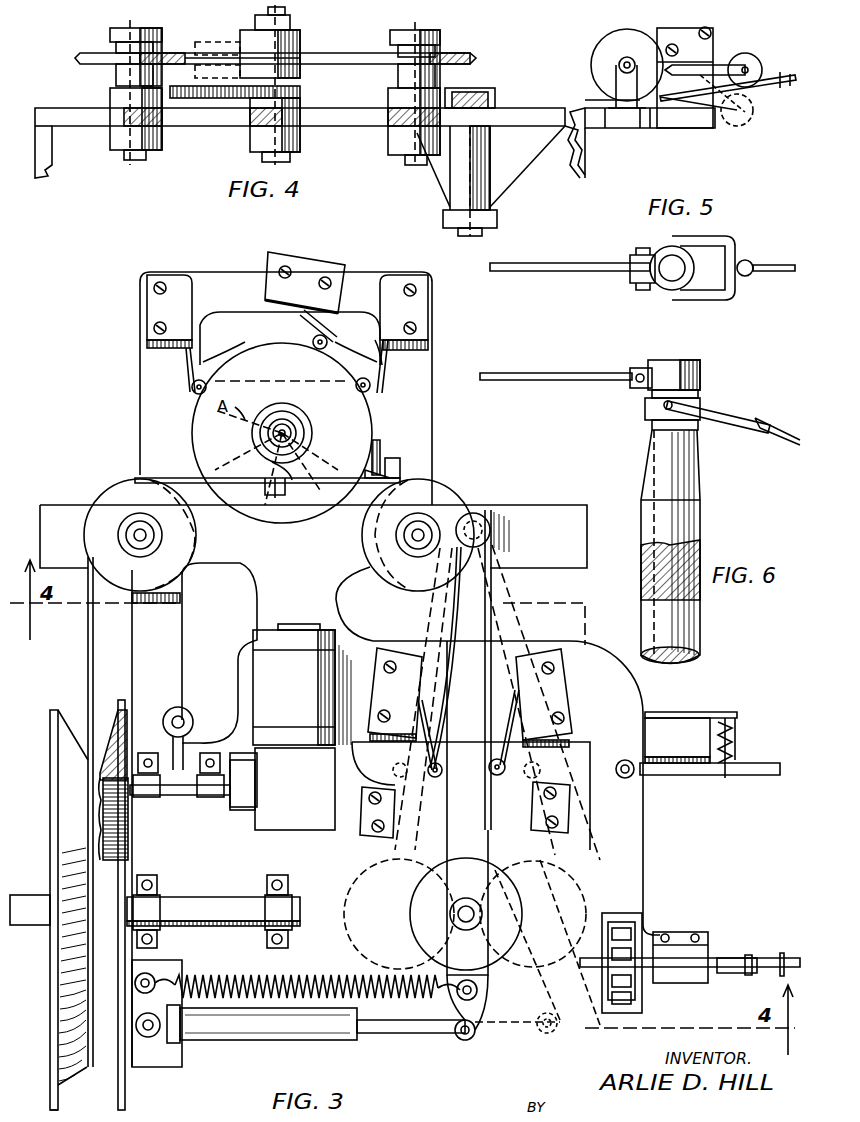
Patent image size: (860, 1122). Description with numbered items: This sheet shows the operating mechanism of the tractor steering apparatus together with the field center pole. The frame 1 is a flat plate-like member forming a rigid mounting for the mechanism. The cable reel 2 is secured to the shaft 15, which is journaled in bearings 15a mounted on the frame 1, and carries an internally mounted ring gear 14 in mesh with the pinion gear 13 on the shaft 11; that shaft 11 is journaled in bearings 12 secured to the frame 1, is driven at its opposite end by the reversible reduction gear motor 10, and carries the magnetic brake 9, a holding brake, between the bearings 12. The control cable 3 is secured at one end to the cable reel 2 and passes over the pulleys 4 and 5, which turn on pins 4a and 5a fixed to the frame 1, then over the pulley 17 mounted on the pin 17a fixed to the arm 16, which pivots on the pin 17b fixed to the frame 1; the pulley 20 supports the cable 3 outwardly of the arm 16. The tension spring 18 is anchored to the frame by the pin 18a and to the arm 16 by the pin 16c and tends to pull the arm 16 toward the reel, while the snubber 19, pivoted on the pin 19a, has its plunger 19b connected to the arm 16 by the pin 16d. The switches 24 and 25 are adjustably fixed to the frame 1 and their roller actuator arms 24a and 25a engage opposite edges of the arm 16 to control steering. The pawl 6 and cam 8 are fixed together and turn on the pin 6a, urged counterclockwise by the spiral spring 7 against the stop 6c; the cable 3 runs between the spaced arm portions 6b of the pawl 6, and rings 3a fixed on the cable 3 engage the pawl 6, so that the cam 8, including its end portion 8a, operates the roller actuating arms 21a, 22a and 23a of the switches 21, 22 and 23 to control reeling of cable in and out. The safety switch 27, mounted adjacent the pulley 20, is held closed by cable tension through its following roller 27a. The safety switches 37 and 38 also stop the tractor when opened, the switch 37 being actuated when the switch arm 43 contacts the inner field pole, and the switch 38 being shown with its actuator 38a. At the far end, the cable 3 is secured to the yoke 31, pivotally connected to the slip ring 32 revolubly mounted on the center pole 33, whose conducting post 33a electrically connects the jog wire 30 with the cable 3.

In FIG. 4, the frame 1 is at (522, 110).
In FIG. 3, the frame 1 is at (420, 440).
In FIG. 3, the cable reel 2 is at (50, 720).
In FIG. 4, the control cable 3 is at (338, 58).
In FIG. 5, the control cable 3 is at (780, 78).
In FIG. 6, the control cable 3 is at (785, 262).
In FIG. 3, the control cable 3 is at (207, 495).
In FIG. 5, the rings 3a is at (790, 88).
In FIG. 3, the rings 3a is at (292, 480).
In FIG. 4, the pulley 4 is at (90, 52).
In FIG. 3, the pulley 4 is at (196, 515).
In FIG. 4, the pin 4a is at (128, 160).
In FIG. 3, the pin 4a is at (135, 530).
In FIG. 4, the pulley 5 is at (455, 53).
In FIG. 3, the pulley 5 is at (362, 540).
In FIG. 4, the pin 5a is at (412, 165).
In FIG. 3, the pin 5a is at (420, 532).
In FIG. 3, the pawl 6 is at (270, 505).
In FIG. 3, the pin 6a is at (276, 432).
In FIG. 4, the arm portions 6b is at (214, 42).
In FIG. 3, the stop 6c is at (380, 445).
In FIG. 3, the spiral spring 7 is at (305, 425).
In FIG. 3, the cam 8 is at (256, 345).
In FIG. 3, the end portion of cam 8a is at (380, 325).
In FIG. 3, the magnetic brake 9 is at (185, 712).
In FIG. 3, the reversible reduction gear motor 10 is at (272, 668).
In FIG. 3, the shaft 11 is at (235, 810).
In FIG. 3, the bearings 12 is at (150, 800).
In FIG. 3, the pinion gear 13 is at (118, 712).
In FIG. 3, the ring gear 14 is at (100, 772).
In FIG. 3, the shaft 15 is at (290, 908).
In FIG. 3, the bearings 15a is at (270, 893).
In FIG. 4, the arm 16 is at (482, 93).
In FIG. 3, the arm 16 is at (470, 835).
In FIG. 3, the pin 16c is at (475, 1035).
In FIG. 3, the pin 16d is at (462, 1040).
In FIG. 3, the pulley 17 is at (515, 897).
In FIG. 3, the pin 17a is at (518, 975).
In FIG. 3, the pin 17b is at (480, 515).
In FIG. 3, the spring 18 is at (290, 965).
In FIG. 3, the pin 18a is at (138, 1067).
In FIG. 3, the snubber 19 is at (240, 1025).
In FIG. 3, the pin 19a is at (175, 1067).
In FIG. 3, the plunger 19b is at (400, 1035).
In FIG. 5, the pulley 20 is at (592, 88).
In FIG. 3, the pulley 20 is at (645, 985).
In FIG. 3, the switch 21 is at (415, 298).
In FIG. 3, the roller actuating arm 21a is at (375, 380).
In FIG. 3, the switch 22 is at (300, 258).
In FIG. 3, the roller actuating arm 22a is at (338, 320).
In FIG. 3, the switch 23 is at (160, 298).
In FIG. 3, the roller actuating arm 23a is at (185, 372).
In FIG. 3, the switch 24 is at (393, 657).
In FIG. 3, the roller actuator arm 24a is at (408, 820).
In FIG. 3, the switch 25 is at (555, 680).
In FIG. 3, the roller actuator arm 25a is at (540, 755).
In FIG. 5, the safety switch 27 is at (675, 35).
In FIG. 3, the safety switch 27 is at (688, 932).
In FIG. 5, the following roller 27a is at (735, 55).
In FIG. 3, the following roller 27a is at (752, 955).
In FIG. 6, the jog wire 30 is at (590, 262).
In FIG. 6, the yoke 31 is at (725, 300).
In FIG. 6, the slip ring 32 is at (645, 405).
In FIG. 6, the center pole 33 is at (690, 475).
In FIG. 6, the post 33a is at (668, 362).
In FIG. 3, the switch 37 is at (672, 730).
In FIG. 3, the switch 38 is at (375, 800).
In FIG. 3, the bracket 38a is at (565, 805).
In FIG. 3, the switch arm 43 is at (748, 775).